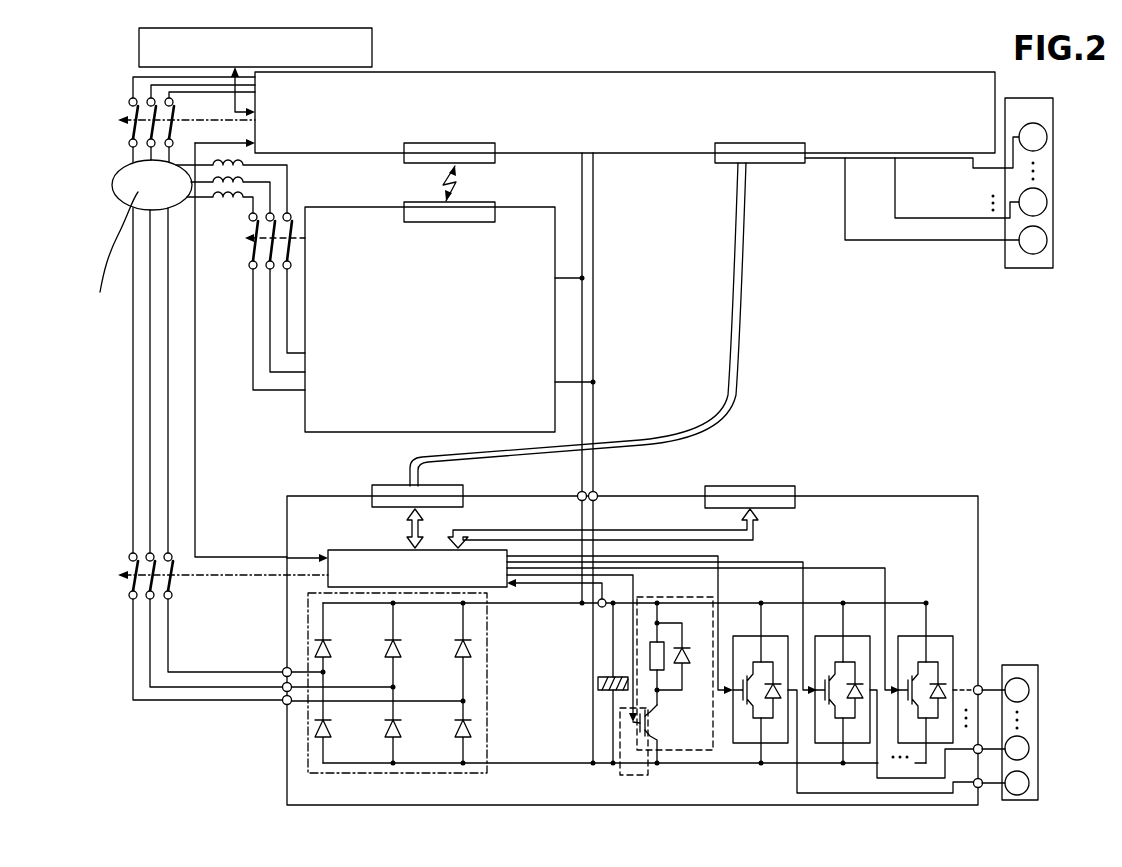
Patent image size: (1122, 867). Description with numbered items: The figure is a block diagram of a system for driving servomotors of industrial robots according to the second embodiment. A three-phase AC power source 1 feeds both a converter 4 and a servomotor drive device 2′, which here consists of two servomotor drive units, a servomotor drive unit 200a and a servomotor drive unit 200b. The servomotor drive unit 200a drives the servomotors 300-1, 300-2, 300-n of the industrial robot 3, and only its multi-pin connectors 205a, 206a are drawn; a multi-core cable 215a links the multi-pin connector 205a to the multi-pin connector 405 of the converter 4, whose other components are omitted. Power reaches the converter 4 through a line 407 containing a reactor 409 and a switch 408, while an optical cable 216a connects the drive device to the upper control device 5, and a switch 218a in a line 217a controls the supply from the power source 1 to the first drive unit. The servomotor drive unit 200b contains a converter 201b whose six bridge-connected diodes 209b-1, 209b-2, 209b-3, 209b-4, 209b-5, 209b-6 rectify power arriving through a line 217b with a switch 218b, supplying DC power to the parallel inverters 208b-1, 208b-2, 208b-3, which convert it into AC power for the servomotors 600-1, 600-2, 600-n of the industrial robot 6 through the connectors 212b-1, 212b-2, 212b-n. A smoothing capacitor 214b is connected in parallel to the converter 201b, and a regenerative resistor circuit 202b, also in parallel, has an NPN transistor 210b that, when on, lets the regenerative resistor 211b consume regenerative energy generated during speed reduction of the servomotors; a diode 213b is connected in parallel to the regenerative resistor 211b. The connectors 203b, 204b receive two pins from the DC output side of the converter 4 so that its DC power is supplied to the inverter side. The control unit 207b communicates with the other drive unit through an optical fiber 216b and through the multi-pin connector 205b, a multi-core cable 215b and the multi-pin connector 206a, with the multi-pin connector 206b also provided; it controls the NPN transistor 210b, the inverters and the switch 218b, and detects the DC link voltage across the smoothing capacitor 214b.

The three-phase AC power source 1 is at (112, 195).
The servomotor drive device 2′ is at (685, 69).
The industrial robot 3 is at (1010, 98).
The converter 4 is at (305, 414).
The upper control device 5 is at (372, 47).
The industrial robot 6 is at (1040, 706).
The servomotor drive unit 200a is at (447, 72).
The servomotor drive unit 200b is at (287, 760).
The converter 201b is at (308, 728).
The regenerative resistor circuit 202b is at (713, 750).
The connector 203b is at (577, 492).
The connector 204b is at (598, 492).
The multi-pin connector 205a is at (495, 162).
The multi-pin connector 205b is at (372, 488).
The multi-pin connector 206a is at (715, 165).
The multi-pin connector 206b is at (777, 487).
The control unit 207b is at (355, 550).
The inverter 208b-1 is at (745, 636).
The inverter 208b-2 is at (858, 636).
The inverter 208b-3 is at (937, 636).
The diode 209b-1 is at (352, 634).
The diode 209b-2 is at (330, 735).
The diode 209b-3 is at (420, 634).
The diode 209b-4 is at (400, 735).
The diode 209b-5 is at (471, 650).
The diode 209b-6 is at (471, 728).
The NPN transistor 210b is at (656, 742).
The regenerative resistor 211b is at (666, 645).
The connector 212b-1 is at (983, 787).
The connector 212b-2 is at (980, 744).
The connector 212b-n is at (980, 685).
The diode 213b is at (688, 668).
The smoothing capacitor 214b is at (600, 691).
The multi-core cable 215a is at (465, 182).
The multi-core cable 215b is at (748, 345).
The optical cable 216a is at (232, 108).
The optical fiber 216b is at (199, 517).
The line 217a is at (120, 82).
The line 217b is at (122, 684).
The switch 218a is at (116, 138).
The switch 218b is at (114, 550).
The servomotor 300-1 is at (1019, 246).
The servomotor 300-2 is at (1019, 200).
The servomotor 300-n is at (1036, 123).
The multi-pin connector 405 is at (404, 206).
The line 407 is at (250, 402).
The switch 408 is at (243, 258).
The reactor 409 is at (226, 220).
The servomotor 600-1 is at (1029, 783).
The servomotor 600-2 is at (1029, 748).
The servomotor 600-n is at (1029, 690).